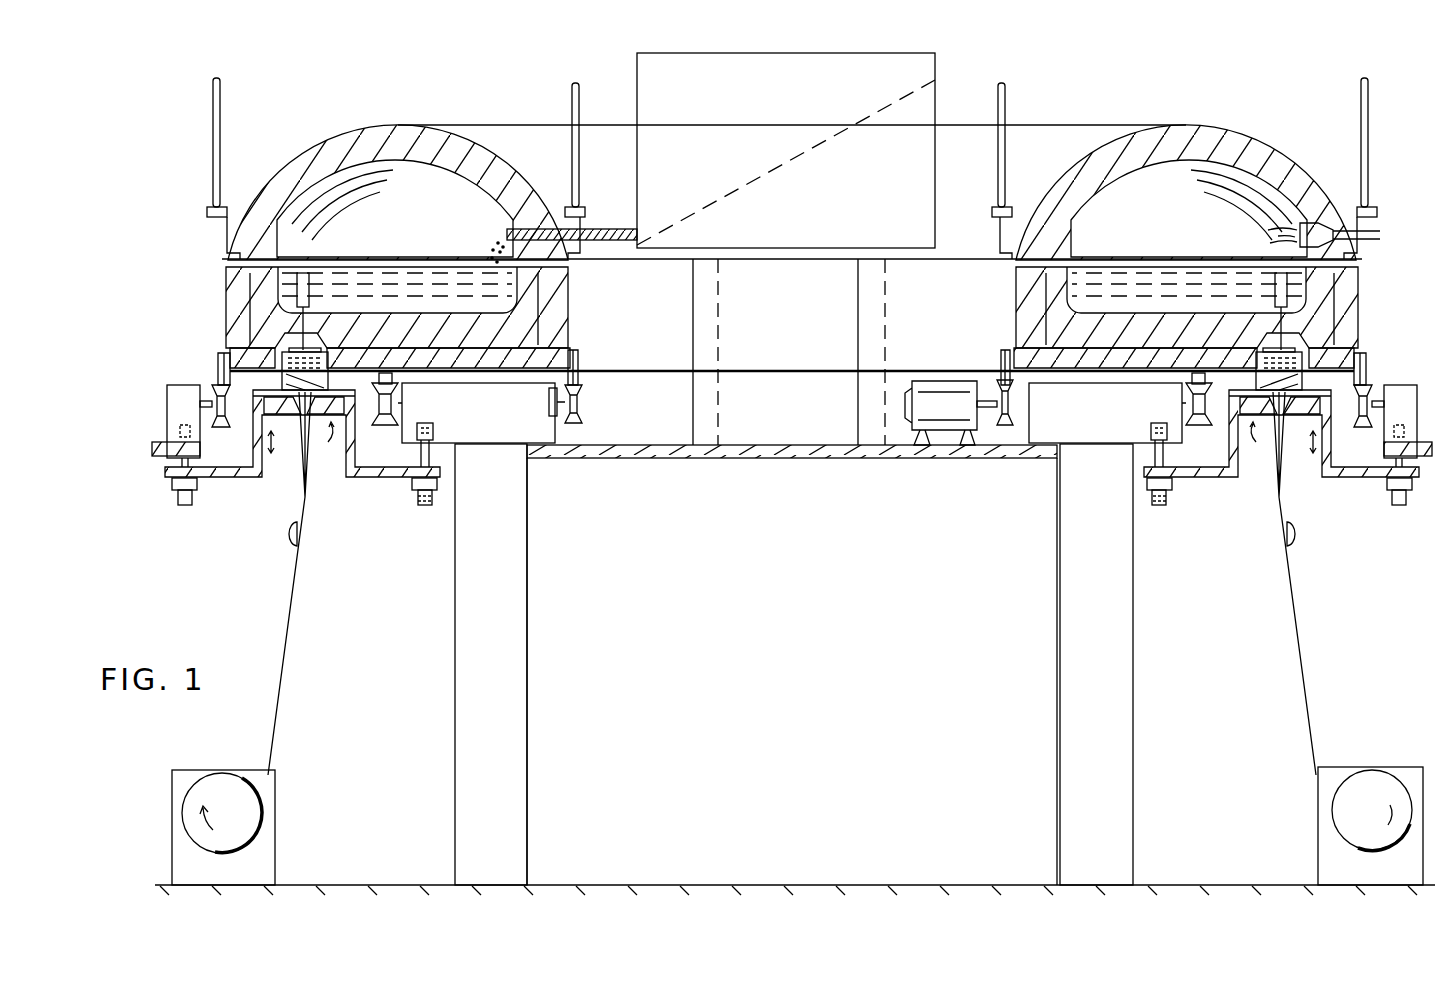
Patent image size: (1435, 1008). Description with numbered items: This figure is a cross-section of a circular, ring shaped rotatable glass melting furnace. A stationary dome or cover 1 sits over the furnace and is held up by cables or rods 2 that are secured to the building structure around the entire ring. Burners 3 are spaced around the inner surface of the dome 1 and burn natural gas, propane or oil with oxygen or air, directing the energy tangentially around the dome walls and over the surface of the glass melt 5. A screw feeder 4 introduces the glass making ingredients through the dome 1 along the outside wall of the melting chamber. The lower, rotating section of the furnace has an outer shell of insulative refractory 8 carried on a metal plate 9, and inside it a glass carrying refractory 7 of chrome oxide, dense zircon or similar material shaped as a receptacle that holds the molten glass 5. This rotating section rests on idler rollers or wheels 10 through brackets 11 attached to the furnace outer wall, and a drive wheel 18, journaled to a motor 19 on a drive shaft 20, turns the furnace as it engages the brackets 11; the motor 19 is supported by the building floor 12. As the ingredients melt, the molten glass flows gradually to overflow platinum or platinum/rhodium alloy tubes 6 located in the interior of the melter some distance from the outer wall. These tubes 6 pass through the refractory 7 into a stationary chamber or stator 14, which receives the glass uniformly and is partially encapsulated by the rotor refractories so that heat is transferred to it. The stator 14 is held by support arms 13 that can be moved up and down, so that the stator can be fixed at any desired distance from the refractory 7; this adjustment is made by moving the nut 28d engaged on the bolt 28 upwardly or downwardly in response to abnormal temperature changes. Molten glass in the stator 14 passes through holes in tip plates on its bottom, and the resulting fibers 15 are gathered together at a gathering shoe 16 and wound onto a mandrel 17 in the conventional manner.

The stationary dome 1 is at (350, 128).
The cables or rods 2 is at (222, 100).
The burners 3 is at (1310, 225).
The screw feeder 4 is at (595, 232).
The glass melt 5 is at (420, 268).
The overflow tubes 6 is at (310, 288).
The glass carrying refractory 7 is at (258, 290).
The insulative refractory 8 is at (570, 300).
The metal plate 9 is at (238, 350).
The idler rollers 10 is at (220, 420).
The brackets 11 is at (222, 372).
The building floor 12 is at (660, 460).
The support arms 13 is at (232, 477).
The stator 14 is at (792, 435).
The fibers 15 is at (306, 500).
The gathering shoe 16 is at (290, 540).
The mandrel 17 is at (185, 795).
The drive wheel 18 is at (1005, 432).
The motor 19 is at (940, 378).
The drive shaft 20 is at (1000, 380).
The bolt 28 is at (432, 458).
The nut 28d is at (432, 490).